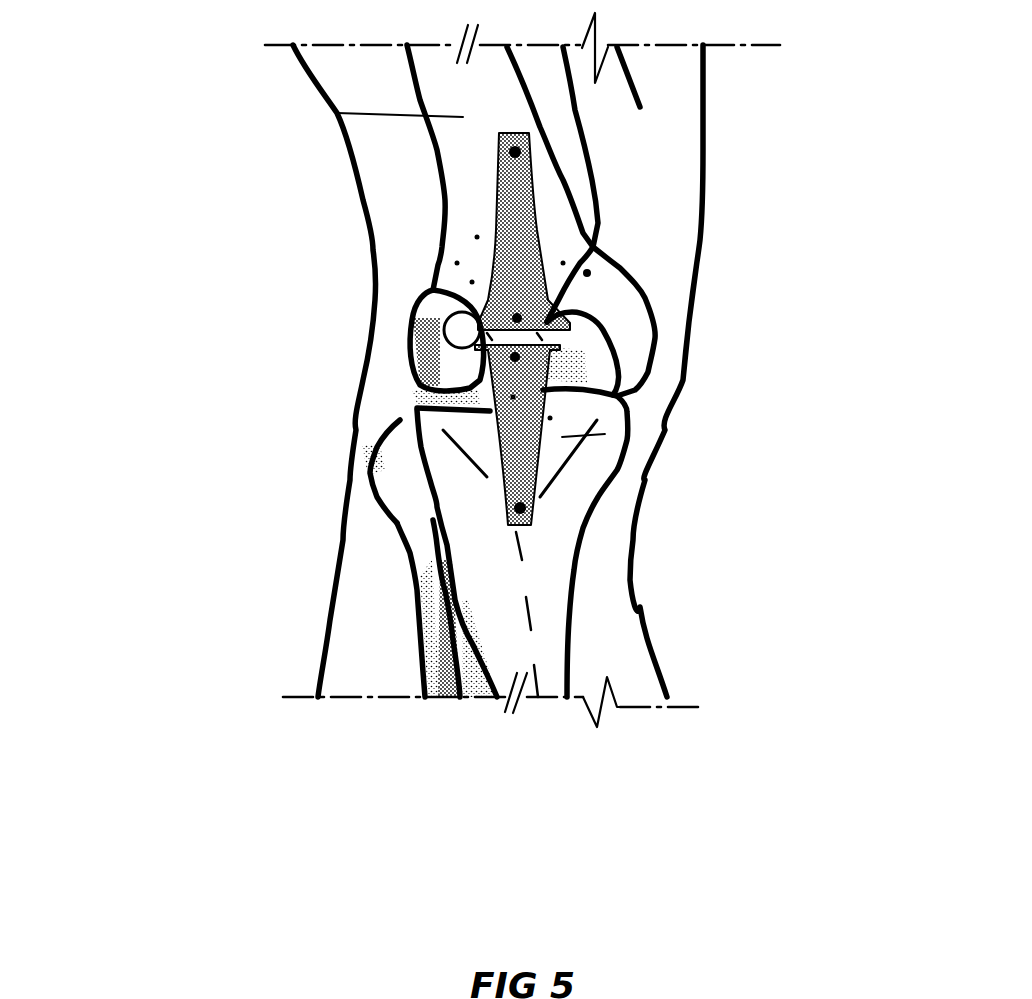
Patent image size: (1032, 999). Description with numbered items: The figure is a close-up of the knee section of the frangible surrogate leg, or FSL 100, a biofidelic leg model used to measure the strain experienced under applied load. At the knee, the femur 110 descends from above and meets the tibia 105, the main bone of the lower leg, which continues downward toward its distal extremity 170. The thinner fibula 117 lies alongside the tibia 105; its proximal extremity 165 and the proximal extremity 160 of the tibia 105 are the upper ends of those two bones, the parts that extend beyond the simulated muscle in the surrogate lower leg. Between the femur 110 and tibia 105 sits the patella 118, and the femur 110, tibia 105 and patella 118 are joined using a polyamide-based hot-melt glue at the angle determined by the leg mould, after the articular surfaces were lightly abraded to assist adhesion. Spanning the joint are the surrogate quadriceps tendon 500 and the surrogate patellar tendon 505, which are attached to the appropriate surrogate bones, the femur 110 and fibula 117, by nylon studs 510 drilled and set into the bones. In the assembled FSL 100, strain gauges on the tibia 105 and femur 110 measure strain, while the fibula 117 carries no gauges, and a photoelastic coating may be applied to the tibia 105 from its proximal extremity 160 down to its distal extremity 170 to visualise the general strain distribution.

The FSL 100 is at (262, 203).
The tibia 105 is at (547, 552).
The femur 110 is at (340, 113).
The fibula 117 is at (425, 603).
The patella 118 is at (545, 328).
The proximal extremity 160 is at (640, 383).
The proximal extremity 165 is at (398, 458).
The distal extremity 170 is at (547, 627).
The surrogate quadriceps tendon 500 is at (543, 247).
The surrogate patellar tendon 505 is at (412, 347).
The nylon studs 510 is at (535, 152).